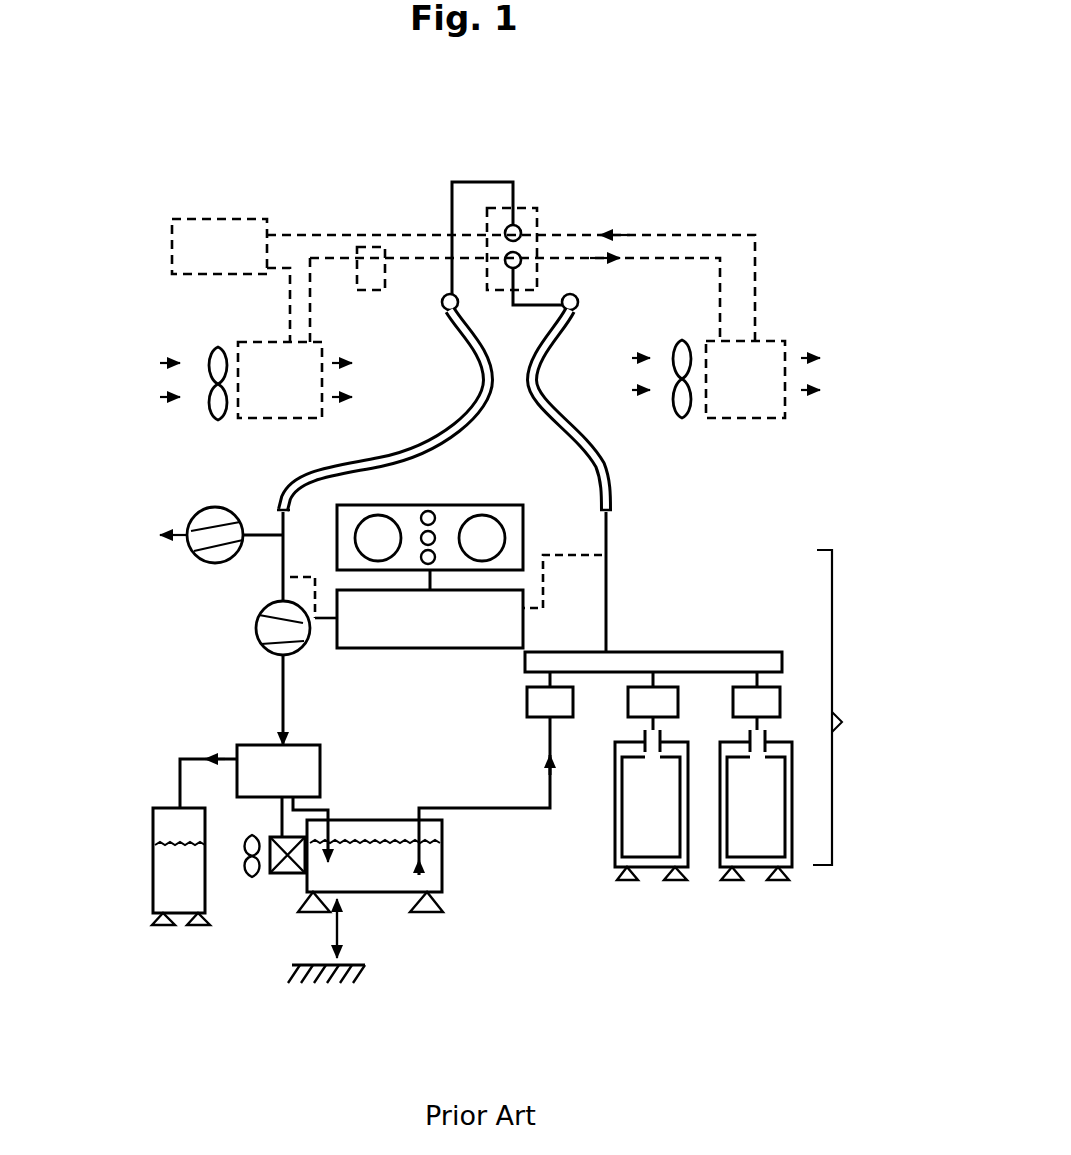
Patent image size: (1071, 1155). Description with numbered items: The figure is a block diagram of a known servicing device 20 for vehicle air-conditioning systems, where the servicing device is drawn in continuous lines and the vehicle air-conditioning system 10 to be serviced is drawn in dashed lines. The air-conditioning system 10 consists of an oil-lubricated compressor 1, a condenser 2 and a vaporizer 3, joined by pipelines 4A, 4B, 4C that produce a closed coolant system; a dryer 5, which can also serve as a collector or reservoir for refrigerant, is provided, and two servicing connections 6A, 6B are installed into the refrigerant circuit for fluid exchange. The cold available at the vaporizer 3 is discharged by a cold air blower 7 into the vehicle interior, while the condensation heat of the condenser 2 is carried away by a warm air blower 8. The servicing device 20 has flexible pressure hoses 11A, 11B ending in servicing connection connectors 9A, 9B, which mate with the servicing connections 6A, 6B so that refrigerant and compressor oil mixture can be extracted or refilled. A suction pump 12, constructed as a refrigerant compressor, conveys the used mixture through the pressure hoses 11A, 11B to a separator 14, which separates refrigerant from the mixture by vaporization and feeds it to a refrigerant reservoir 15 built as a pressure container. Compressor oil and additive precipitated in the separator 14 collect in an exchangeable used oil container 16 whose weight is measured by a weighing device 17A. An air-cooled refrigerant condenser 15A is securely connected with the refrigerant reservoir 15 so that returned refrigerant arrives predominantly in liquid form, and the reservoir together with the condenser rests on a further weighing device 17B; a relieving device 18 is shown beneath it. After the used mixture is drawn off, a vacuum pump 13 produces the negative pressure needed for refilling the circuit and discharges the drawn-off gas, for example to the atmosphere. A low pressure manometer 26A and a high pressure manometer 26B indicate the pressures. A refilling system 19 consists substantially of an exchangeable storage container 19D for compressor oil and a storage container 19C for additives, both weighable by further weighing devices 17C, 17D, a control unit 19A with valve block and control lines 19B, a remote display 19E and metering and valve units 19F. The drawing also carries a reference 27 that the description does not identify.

The compressor 1 is at (221, 258).
The condenser 2 is at (280, 397).
The vaporizer 3 is at (748, 395).
The pipeline 4A is at (288, 308).
The pipeline 4B is at (622, 257).
The pipeline 4C is at (311, 233).
The dryer 5 is at (368, 268).
The servicing connection 6A is at (519, 228).
The servicing connection 6B is at (520, 256).
The cold air blower 7 is at (689, 342).
The warm air blower 8 is at (210, 348).
The servicing connection connector 9A is at (445, 295).
The servicing connection connector 9B is at (577, 299).
The vehicle air-conditioning system 10 is at (753, 177).
The pressure hose 11A is at (492, 373).
The pressure hose 11B is at (537, 373).
The suction pump 12 is at (256, 637).
The vacuum pump 13 is at (195, 517).
The separator 14 is at (290, 788).
The refrigerant reservoir 15 is at (365, 870).
The refrigerant condenser 15A is at (270, 873).
The used oil container 16 is at (155, 872).
The weighing device 17A is at (146, 918).
The weighing device 17B is at (450, 901).
The weighing device 17C is at (797, 881).
The weighing device 17D is at (612, 878).
The relieving device 18 is at (318, 961).
The refilling system 19 is at (850, 707).
The control unit with valve block 19A is at (450, 637).
The control lines 19B is at (577, 555).
The storage container 19C is at (759, 867).
The storage container 19D is at (655, 867).
The remote display 19E is at (383, 506).
The metering and valve unit 19F is at (569, 686).
The servicing device 20 is at (762, 502).
The low pressure manometer 26A is at (360, 519).
The high pressure manometer 26B is at (468, 522).
The indicator 27 is at (452, 540).